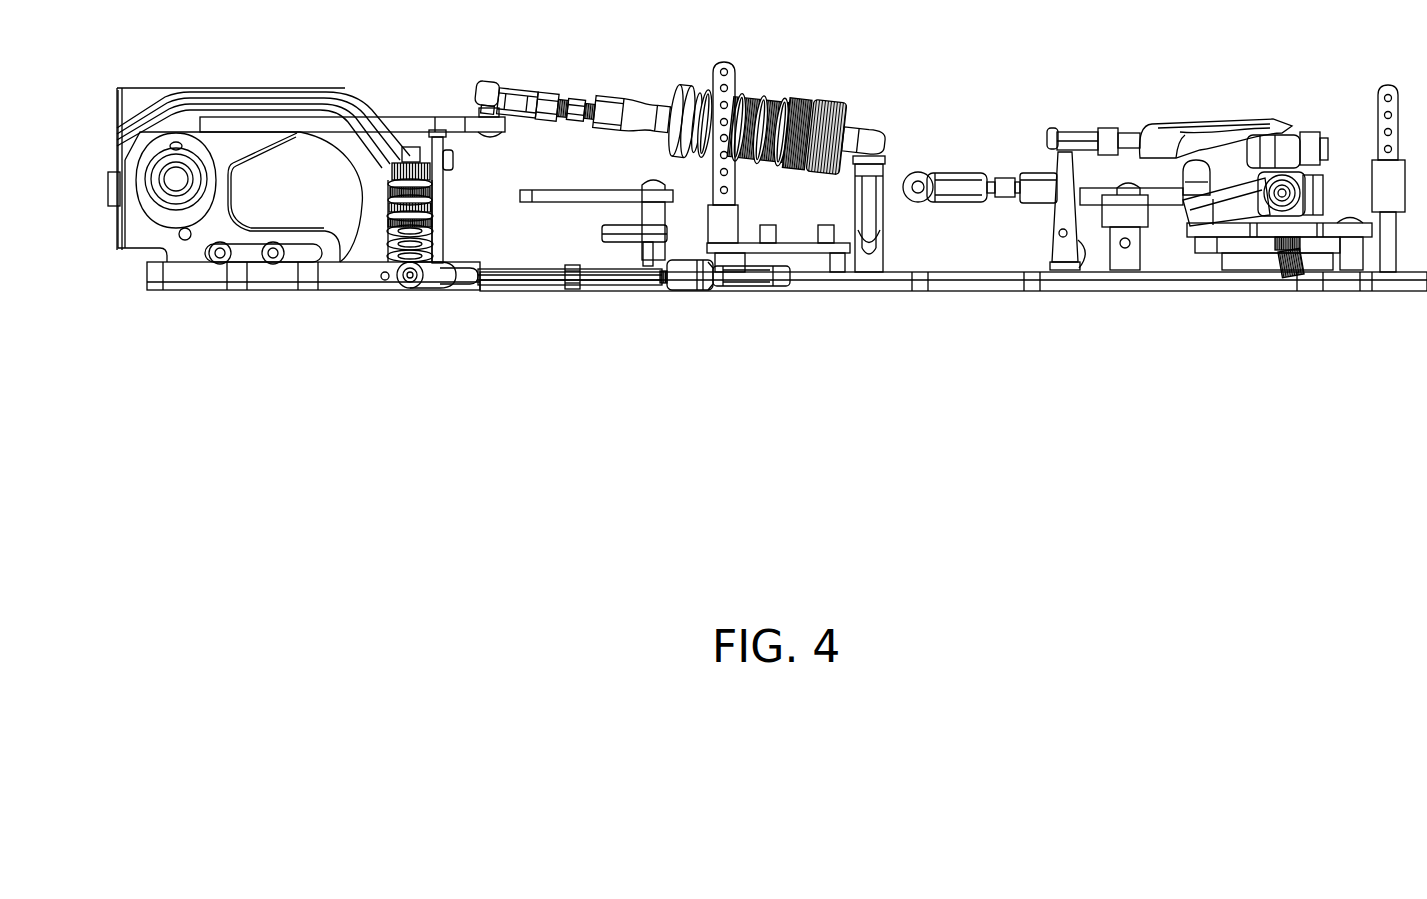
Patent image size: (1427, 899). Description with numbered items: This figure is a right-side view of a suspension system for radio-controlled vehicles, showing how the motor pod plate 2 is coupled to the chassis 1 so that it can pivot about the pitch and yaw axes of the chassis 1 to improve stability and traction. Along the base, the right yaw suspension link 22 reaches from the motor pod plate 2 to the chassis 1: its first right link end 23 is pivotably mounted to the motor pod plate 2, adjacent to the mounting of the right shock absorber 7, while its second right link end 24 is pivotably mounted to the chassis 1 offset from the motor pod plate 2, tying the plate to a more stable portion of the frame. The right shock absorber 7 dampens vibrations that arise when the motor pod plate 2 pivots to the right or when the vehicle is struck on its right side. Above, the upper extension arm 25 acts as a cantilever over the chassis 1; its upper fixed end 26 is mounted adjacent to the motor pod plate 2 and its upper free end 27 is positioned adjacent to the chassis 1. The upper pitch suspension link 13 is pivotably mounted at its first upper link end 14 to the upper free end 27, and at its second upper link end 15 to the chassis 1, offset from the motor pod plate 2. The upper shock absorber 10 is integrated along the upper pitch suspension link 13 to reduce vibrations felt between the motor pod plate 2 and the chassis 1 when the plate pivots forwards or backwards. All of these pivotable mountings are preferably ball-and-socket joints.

The chassis 1 is at (898, 290).
The motor pod plate 2 is at (366, 292).
The right shock absorber 7 is at (432, 190).
The upper shock absorber 10 is at (771, 92).
The upper pitch suspension link 13 is at (617, 100).
The first upper link end 14 is at (494, 80).
The second upper link end 15 is at (872, 122).
The right yaw suspension link 22 is at (597, 282).
The first right link end 23 is at (413, 298).
The second right link end 24 is at (768, 297).
The upper extension arm 25 is at (387, 117).
The upper fixed end 26 is at (242, 113).
The upper free end 27 is at (516, 124).